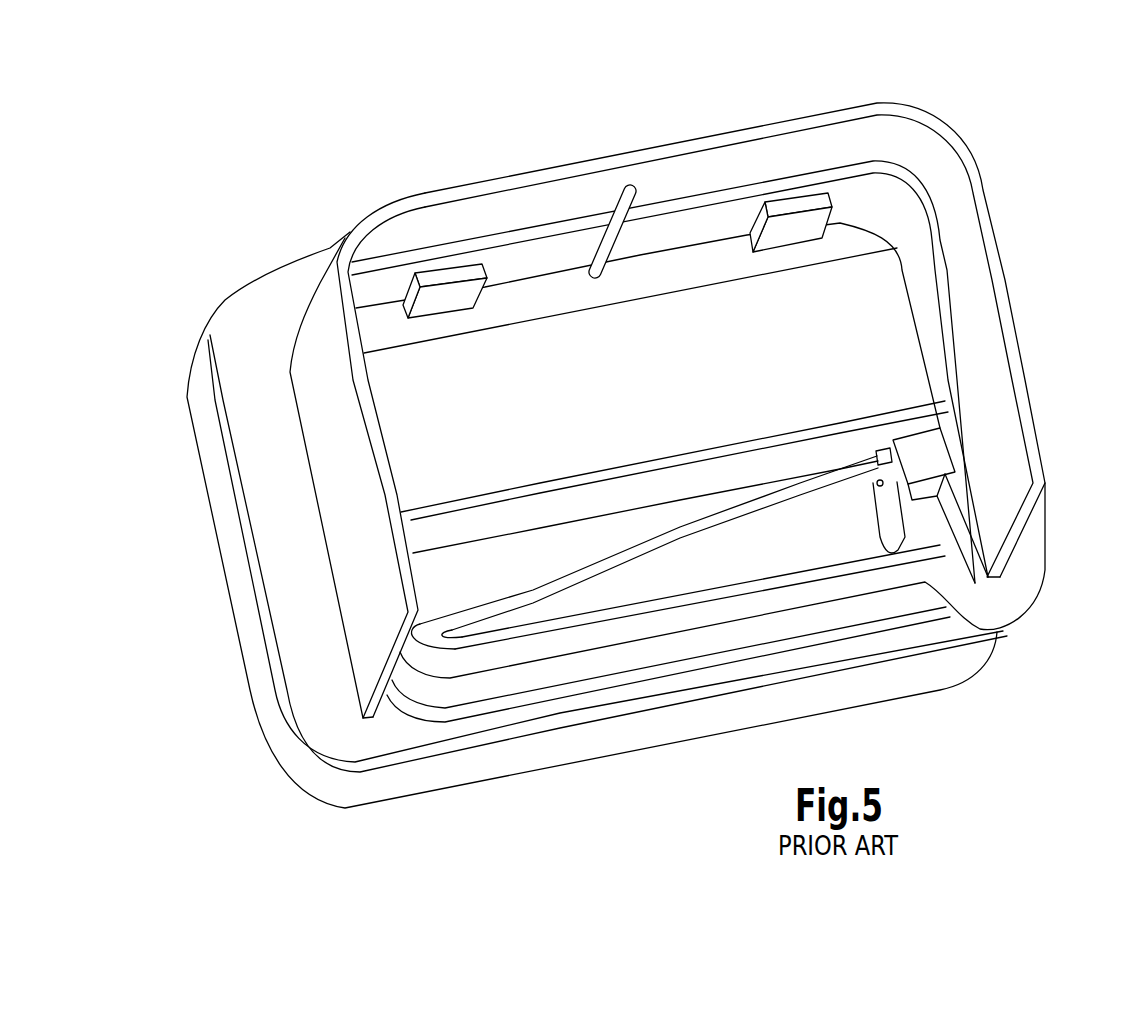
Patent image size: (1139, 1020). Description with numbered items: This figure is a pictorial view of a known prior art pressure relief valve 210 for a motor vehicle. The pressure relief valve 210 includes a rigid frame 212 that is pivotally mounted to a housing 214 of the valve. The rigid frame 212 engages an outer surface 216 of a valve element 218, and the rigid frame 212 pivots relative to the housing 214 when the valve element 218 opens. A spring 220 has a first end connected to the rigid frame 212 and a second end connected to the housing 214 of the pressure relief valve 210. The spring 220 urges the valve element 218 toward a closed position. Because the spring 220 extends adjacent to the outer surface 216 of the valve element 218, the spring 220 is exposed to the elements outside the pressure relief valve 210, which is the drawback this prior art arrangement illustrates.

The pressure relief valve 210 is at (653, 452).
The rigid frame 212 is at (565, 637).
The housing 214 is at (983, 337).
The outer surface 216 is at (1000, 632).
The valve element 218 is at (657, 647).
The spring 220 is at (680, 523).